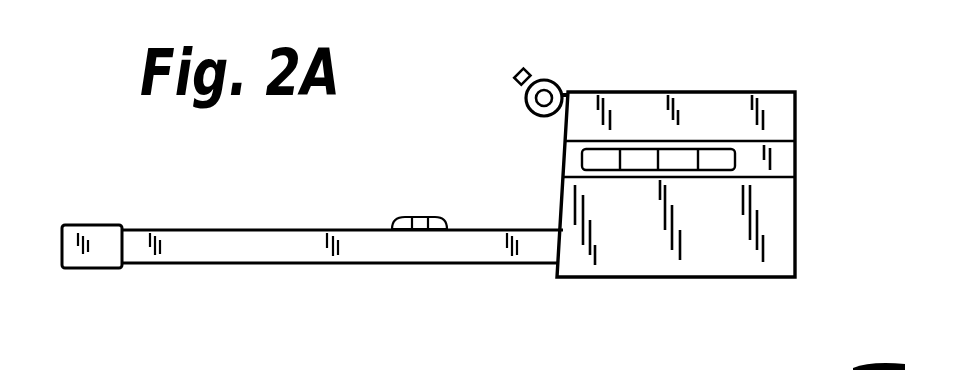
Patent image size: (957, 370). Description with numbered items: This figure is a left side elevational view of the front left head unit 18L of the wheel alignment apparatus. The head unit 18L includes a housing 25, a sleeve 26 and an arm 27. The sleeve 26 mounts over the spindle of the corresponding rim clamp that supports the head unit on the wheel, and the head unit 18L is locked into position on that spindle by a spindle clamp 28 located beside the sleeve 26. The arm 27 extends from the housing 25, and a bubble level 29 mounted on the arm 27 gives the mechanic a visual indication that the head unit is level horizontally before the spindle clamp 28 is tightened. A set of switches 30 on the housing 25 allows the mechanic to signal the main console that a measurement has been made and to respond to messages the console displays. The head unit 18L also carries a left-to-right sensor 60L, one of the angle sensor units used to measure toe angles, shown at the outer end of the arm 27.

The left-to-right sensor 60L is at (109, 270).
The arm 27 is at (259, 229).
The bubble level 29 is at (437, 217).
The front left head unit 18L is at (829, 161).
The housing 25 is at (795, 212).
The set of switches 30 is at (675, 158).
The sleeve 26 is at (562, 84).
The spindle clamp 28 is at (514, 74).